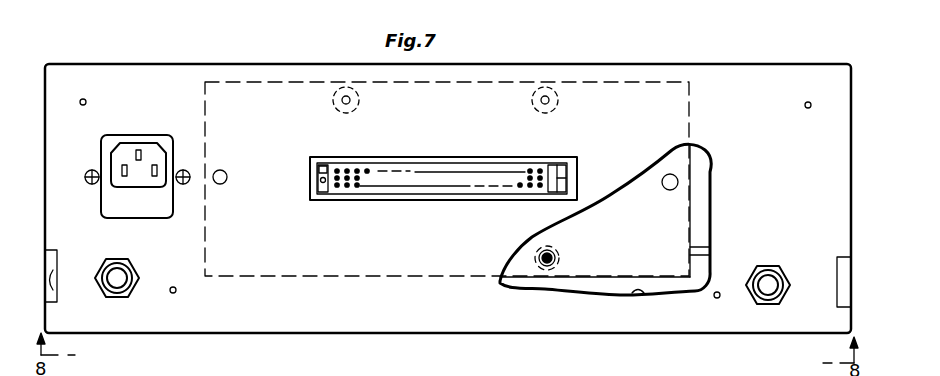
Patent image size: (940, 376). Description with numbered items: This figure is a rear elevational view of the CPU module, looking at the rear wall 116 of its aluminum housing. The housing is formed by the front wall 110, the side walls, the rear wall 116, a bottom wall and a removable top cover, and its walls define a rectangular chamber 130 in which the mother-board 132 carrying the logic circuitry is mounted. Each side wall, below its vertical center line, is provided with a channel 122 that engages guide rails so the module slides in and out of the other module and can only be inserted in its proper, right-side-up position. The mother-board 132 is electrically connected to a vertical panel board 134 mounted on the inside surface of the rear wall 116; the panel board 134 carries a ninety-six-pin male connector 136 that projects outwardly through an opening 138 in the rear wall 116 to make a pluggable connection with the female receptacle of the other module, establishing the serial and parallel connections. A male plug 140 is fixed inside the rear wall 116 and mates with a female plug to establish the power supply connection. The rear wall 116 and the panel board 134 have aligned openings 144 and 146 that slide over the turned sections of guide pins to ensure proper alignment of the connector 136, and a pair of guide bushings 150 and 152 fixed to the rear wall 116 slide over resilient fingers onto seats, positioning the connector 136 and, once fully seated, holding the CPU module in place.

The front wall 110 is at (50, 252).
The rear wall 116 is at (788, 145).
The channel 122 is at (53, 277).
The rectangular chamber 130 is at (637, 293).
The mother-board 132 is at (702, 252).
The vertical panel board 134 is at (634, 245).
The 96-pin male connector 136 is at (453, 170).
The opening 138 is at (574, 160).
The male plug 140 is at (140, 136).
The opening 144 is at (663, 178).
The opening 146 is at (227, 171).
The guide bushing 150 is at (134, 275).
The guide bushing 152 is at (790, 247).